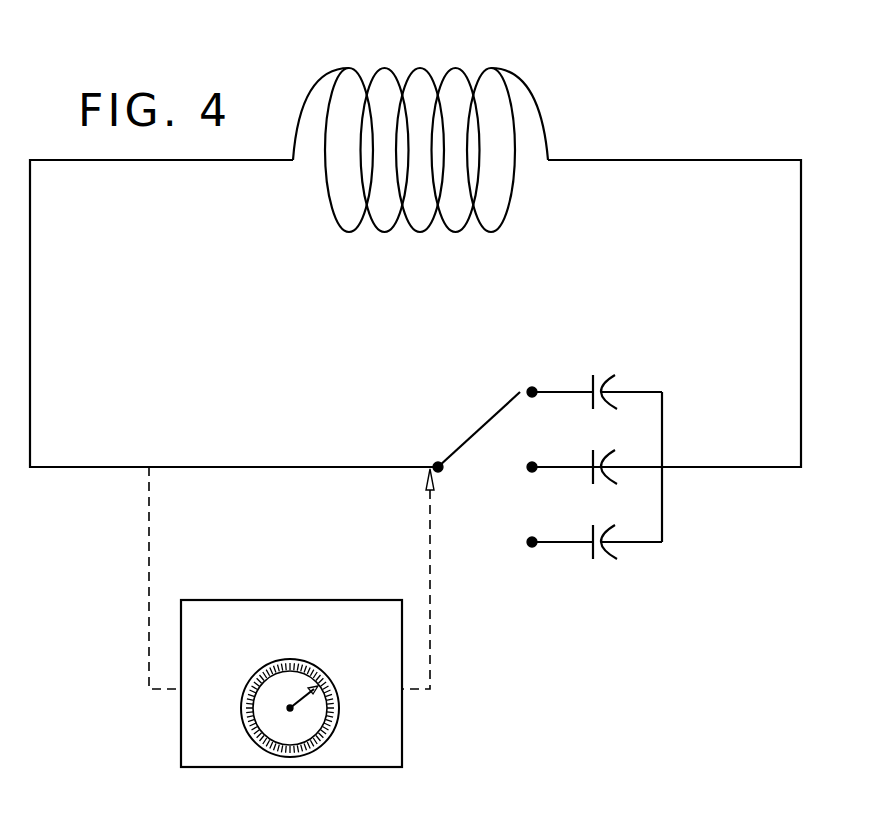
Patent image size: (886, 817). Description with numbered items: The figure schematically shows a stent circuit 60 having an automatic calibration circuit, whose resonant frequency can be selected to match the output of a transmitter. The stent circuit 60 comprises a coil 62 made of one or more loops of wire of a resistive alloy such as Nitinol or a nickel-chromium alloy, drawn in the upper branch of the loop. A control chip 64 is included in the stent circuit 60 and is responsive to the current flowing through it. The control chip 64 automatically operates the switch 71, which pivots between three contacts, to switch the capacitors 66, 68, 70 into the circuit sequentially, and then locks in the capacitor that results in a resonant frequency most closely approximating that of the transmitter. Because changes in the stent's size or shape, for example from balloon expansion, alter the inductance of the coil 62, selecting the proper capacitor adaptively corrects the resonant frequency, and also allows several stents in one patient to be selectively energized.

The stent circuit 60 is at (602, 110).
The coil 62 is at (402, 70).
The control chip 64 is at (208, 600).
The capacitor 66 is at (612, 380).
The capacitor 68 is at (612, 455).
The capacitor 70 is at (612, 530).
The switch 71 is at (462, 445).